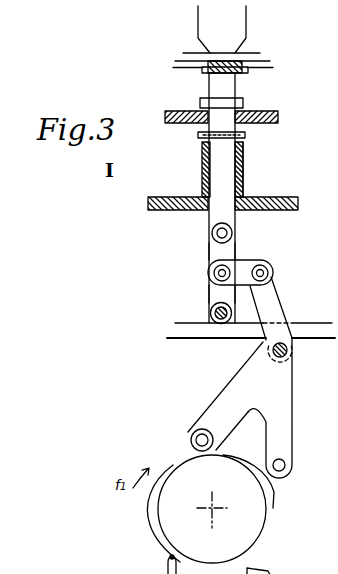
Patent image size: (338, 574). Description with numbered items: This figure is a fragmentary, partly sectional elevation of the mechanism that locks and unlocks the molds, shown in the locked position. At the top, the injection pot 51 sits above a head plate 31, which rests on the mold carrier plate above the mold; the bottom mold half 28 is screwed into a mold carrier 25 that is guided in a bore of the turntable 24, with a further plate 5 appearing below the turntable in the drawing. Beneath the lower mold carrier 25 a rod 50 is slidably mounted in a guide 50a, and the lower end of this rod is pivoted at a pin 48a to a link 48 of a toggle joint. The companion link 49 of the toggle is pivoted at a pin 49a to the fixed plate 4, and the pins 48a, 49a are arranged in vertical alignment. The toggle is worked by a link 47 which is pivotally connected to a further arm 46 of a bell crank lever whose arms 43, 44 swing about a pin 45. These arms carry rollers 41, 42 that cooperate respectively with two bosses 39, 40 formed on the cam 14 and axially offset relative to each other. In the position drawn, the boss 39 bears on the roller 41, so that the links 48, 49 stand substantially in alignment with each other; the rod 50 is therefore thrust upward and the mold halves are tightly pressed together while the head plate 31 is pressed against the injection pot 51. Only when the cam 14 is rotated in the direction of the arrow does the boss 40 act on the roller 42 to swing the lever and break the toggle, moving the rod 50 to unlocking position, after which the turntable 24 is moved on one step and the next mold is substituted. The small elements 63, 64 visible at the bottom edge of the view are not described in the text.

The injection pot 51 is at (234, 31).
The head plate 31 is at (258, 55).
The bottom mold half 28 is at (210, 90).
The mold carrier 25 is at (222, 118).
The turntable 24 is at (270, 116).
The frame plate 5 is at (172, 197).
The rod 50 is at (222, 186).
The guide 50a is at (243, 166).
The pin 48a is at (212, 233).
The link 48 is at (217, 253).
The link 47 is at (245, 266).
The link 49 is at (216, 288).
The pin 49a is at (210, 313).
The further arm 46 is at (277, 298).
The fixed plate 4 is at (218, 333).
The pin 45 is at (290, 351).
The arm of bell crank lever 44 is at (236, 404).
The arm of bell crank lever 43 is at (280, 426).
The roller 42 is at (193, 437).
The roller 41 is at (291, 469).
The cam 14 is at (180, 463).
The boss 39 is at (274, 497).
The boss 40 is at (148, 512).
The pin 63 is at (150, 565).
The guide 64 is at (176, 569).